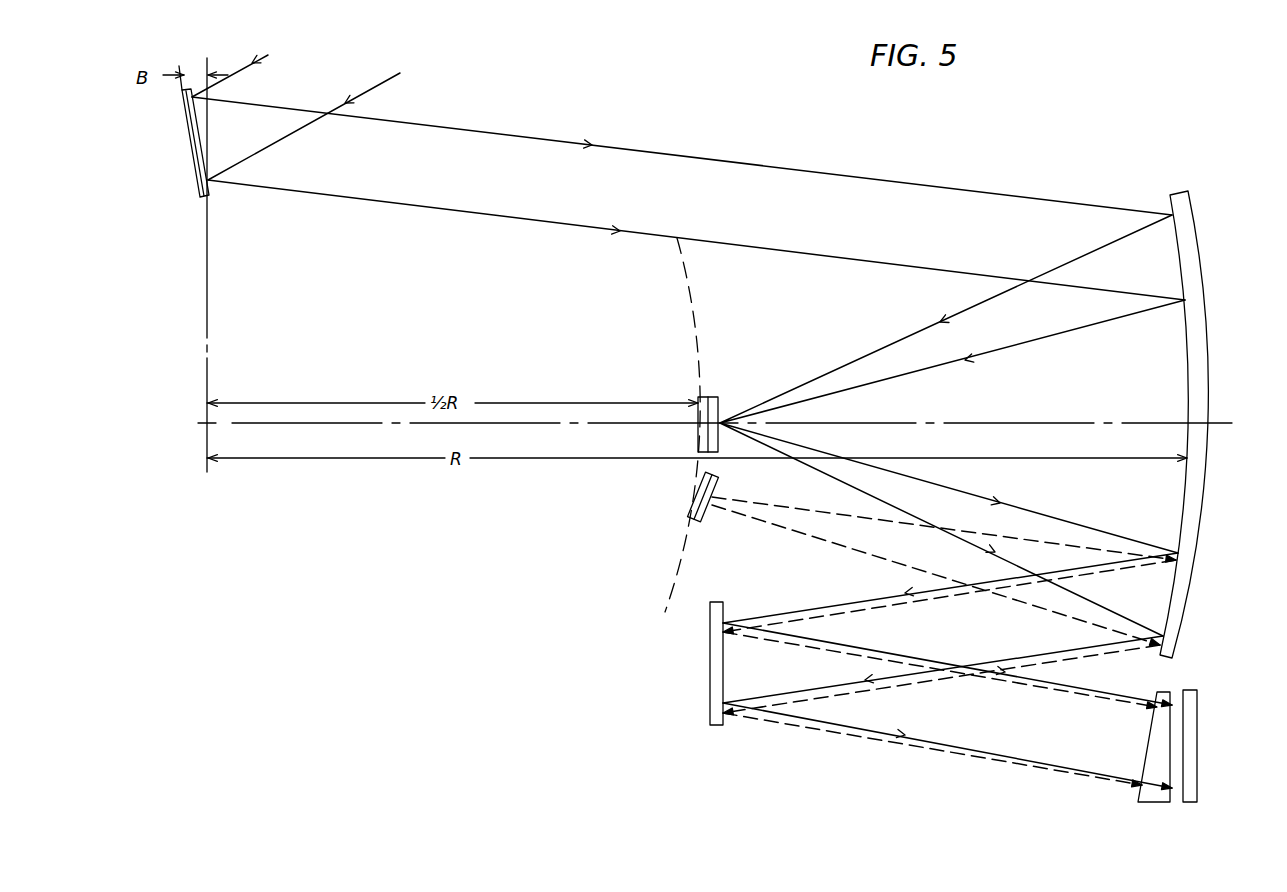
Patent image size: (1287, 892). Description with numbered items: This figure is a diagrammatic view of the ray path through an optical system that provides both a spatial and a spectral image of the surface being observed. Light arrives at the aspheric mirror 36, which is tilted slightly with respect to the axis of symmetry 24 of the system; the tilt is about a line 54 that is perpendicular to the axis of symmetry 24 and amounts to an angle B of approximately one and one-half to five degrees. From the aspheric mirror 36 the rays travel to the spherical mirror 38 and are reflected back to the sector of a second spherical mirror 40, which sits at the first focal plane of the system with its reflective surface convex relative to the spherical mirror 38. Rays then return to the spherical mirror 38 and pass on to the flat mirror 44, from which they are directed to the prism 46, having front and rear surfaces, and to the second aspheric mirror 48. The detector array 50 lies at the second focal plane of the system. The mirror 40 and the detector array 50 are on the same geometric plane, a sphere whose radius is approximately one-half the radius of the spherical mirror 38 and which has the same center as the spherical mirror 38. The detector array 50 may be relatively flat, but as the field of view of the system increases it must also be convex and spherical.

The axis of symmetry 24 is at (1226, 420).
The aspheric mirror 36 is at (201, 130).
The spherical mirror 38 is at (1210, 486).
The sector of a second spherical mirror 40 is at (719, 398).
The flat mirror 44 is at (710, 656).
The prism 46 is at (1155, 731).
The second aspheric mirror 48 is at (1199, 742).
The detector array 50 is at (698, 495).
The line 54 is at (207, 300).